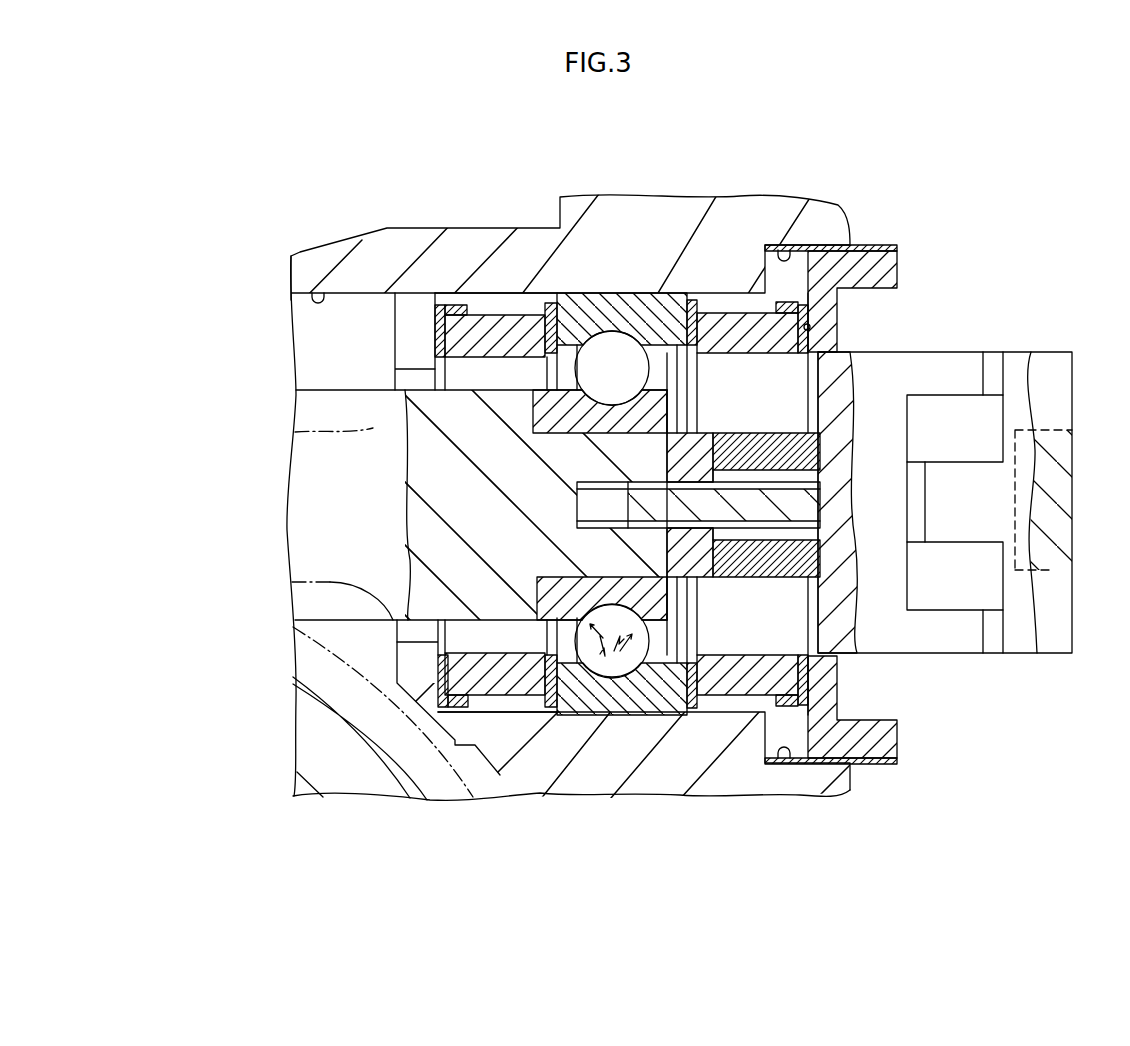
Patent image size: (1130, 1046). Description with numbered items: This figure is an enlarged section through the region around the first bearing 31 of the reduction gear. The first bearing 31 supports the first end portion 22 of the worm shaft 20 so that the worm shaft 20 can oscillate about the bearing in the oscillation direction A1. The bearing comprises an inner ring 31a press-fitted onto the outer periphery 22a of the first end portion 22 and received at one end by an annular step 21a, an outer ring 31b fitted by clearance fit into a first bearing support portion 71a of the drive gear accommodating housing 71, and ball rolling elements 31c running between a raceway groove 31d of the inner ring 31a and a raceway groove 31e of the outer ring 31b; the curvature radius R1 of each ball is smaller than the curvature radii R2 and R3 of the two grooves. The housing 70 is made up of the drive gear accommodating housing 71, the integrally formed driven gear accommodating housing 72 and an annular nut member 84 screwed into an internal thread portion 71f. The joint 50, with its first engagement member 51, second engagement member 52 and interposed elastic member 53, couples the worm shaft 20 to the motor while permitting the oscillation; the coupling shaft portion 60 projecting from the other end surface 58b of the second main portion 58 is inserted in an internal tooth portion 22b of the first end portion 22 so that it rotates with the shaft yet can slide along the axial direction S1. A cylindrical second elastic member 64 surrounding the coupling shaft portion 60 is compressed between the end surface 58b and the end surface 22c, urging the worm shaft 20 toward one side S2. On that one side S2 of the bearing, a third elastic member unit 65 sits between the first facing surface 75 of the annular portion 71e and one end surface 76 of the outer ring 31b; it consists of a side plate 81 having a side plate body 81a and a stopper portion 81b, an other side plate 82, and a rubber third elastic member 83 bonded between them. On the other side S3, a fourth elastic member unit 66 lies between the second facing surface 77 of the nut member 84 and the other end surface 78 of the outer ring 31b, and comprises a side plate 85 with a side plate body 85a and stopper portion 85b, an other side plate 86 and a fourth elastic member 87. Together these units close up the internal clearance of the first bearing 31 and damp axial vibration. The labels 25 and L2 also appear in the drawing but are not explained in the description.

The worm shaft 20 is at (325, 390).
The annular step 21a is at (540, 438).
The first end portion 22 is at (708, 433).
The outer periphery 22a is at (624, 434).
The internal tooth portion 22b is at (646, 528).
The end surface 22c is at (716, 600).
The motor 25 is at (1053, 575).
The first bearing 31 is at (662, 282).
The inner ring 31a is at (535, 458).
The outer ring 31b is at (572, 300).
The rolling elements 31c is at (600, 292).
The raceway groove 31d is at (570, 434).
The raceway groove 31e is at (608, 333).
The joint 50 is at (976, 668).
The first engagement member 51 is at (1055, 351).
The second engagement member 52 is at (962, 352).
The elastic member 53 is at (1005, 407).
The second main portion 58 is at (848, 658).
The other end surface 58b is at (818, 562).
The coupling shaft portion 60 is at (750, 528).
The second elastic member 64 is at (777, 578).
The third elastic member unit 65 is at (532, 708).
The fourth elastic member unit 66 is at (757, 712).
The housing 70 is at (354, 230).
The drive gear accommodating housing 71 is at (321, 294).
The first bearing support portion 71a is at (633, 291).
The annular portion 71e is at (397, 290).
The internal thread portion 71f is at (784, 252).
The driven gear accommodating housing 72 is at (497, 770).
The first facing surface 75 is at (433, 323).
The one end surface 76 is at (545, 350).
The second facing surface 77 is at (811, 327).
The other end surface 78 is at (706, 300).
The side plate 81 is at (476, 322).
The side plate body 81a is at (434, 339).
The stopper portion 81b is at (440, 310).
The other side plate 82 is at (549, 300).
The third elastic member 83 is at (456, 308).
The nut member 84 is at (898, 248).
The side plate 85 is at (812, 300).
The side plate body 85a is at (787, 354).
The stopper portion 85b is at (798, 304).
The other side plate 86 is at (690, 298).
The fourth elastic member 87 is at (740, 291).
The curvature radius of the rolling element R1 is at (608, 618).
The curvature radius of the inner ring raceway groove R2 is at (627, 650).
The curvature radius of the outer ring raceway groove R3 is at (571, 653).
The axial direction S1 is at (183, 526).
The one side S2 is at (104, 500).
The other side S3 is at (208, 500).
The oscillation direction A1 is at (238, 504).
The axis L2 is at (235, 880).